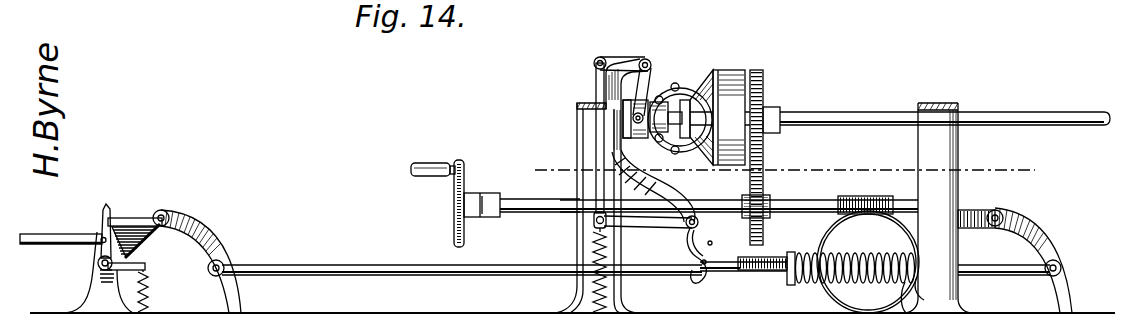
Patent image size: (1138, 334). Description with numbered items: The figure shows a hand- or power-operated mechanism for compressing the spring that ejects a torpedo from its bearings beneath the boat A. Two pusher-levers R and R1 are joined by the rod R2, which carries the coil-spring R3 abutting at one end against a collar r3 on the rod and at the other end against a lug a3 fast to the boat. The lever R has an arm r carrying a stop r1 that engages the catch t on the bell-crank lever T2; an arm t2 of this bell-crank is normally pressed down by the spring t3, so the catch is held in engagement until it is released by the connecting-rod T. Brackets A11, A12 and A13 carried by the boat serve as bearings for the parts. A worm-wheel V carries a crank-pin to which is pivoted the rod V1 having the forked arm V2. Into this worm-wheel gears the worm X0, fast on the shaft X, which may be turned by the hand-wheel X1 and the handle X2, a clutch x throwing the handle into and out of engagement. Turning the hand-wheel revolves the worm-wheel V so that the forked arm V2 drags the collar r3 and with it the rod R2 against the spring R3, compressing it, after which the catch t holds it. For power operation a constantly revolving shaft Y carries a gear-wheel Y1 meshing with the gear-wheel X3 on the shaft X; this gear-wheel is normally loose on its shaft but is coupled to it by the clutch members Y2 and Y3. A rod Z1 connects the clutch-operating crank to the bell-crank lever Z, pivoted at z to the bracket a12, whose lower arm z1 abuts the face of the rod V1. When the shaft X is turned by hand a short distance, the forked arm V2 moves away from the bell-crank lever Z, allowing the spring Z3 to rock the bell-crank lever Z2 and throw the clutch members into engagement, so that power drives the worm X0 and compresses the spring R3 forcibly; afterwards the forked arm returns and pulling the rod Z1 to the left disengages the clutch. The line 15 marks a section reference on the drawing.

The boat A is at (572, 323).
The connecting-rod T is at (44, 236).
The bell-crank lever T2 is at (100, 247).
The bracket A13 is at (103, 300).
The catch t is at (112, 214).
The stop r1 is at (131, 216).
The arm r is at (161, 211).
The arm t2 is at (136, 266).
The spring t3 is at (152, 300).
The pusher-lever R is at (214, 256).
The rod R2 is at (310, 267).
The handle X2 is at (420, 163).
The hand-wheel X1 is at (459, 188).
The clutch x is at (481, 216).
The shaft X is at (543, 210).
The bracket A12 is at (577, 147).
The rod Z1 is at (592, 100).
The bell-crank lever Z2 is at (618, 58).
The bell-crank lever Z is at (668, 226).
The spring Z3 is at (593, 284).
The bracket a12 is at (680, 196).
The coupling member Y3 is at (654, 96).
The coupling member Y2 is at (722, 74).
The gear-wheel Y1 is at (766, 88).
The shaft Y is at (831, 118).
The gear-wheel X3 is at (739, 195).
The worm X0 is at (863, 200).
The section line 15 is at (786, 171).
The worm-wheel V is at (868, 262).
The rod V1 is at (773, 257).
The collar r3 is at (787, 280).
The forked arm V2 is at (708, 279).
The pivot z is at (708, 245).
The lower arm z1 is at (704, 263).
The bracket A11 is at (942, 127).
The pusher-lever R1 is at (1036, 242).
The coil-spring R3 is at (905, 284).
The lug a3 is at (928, 295).